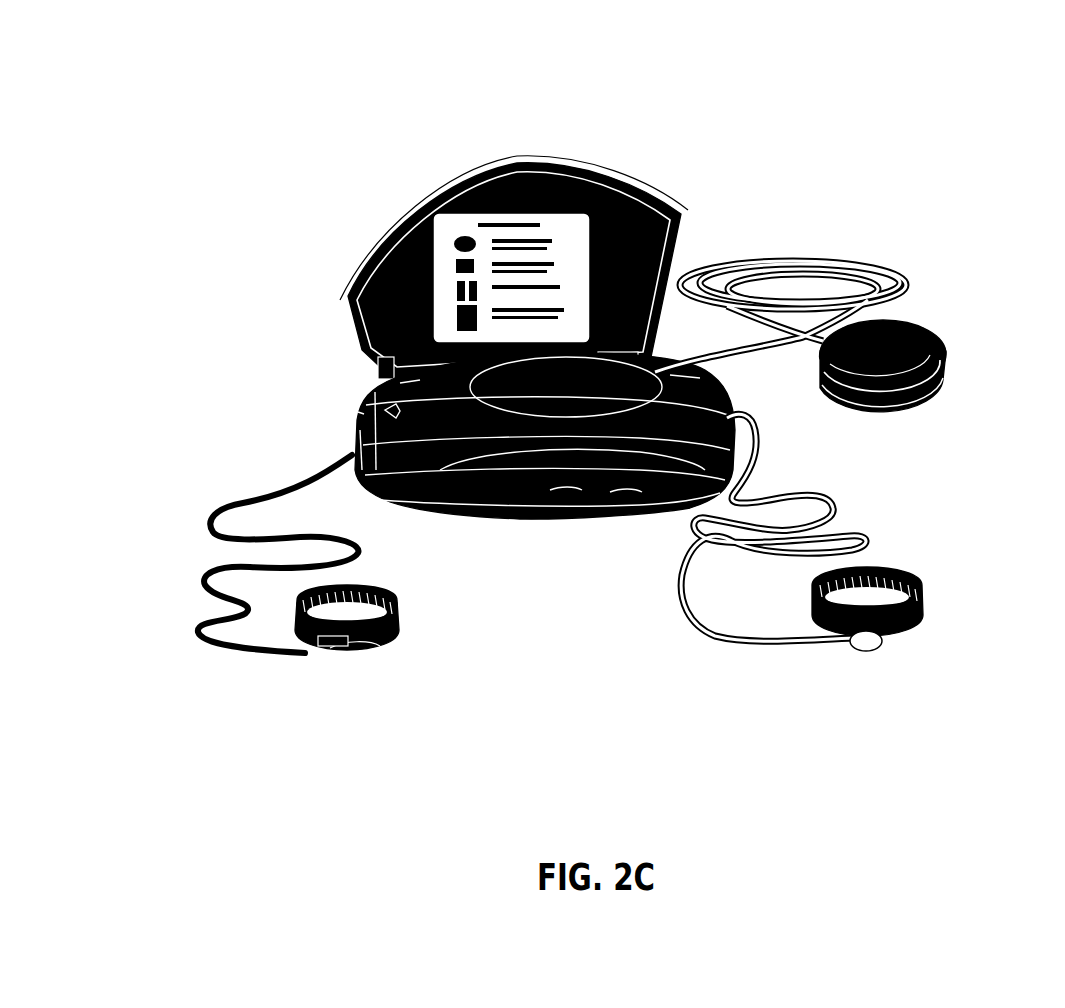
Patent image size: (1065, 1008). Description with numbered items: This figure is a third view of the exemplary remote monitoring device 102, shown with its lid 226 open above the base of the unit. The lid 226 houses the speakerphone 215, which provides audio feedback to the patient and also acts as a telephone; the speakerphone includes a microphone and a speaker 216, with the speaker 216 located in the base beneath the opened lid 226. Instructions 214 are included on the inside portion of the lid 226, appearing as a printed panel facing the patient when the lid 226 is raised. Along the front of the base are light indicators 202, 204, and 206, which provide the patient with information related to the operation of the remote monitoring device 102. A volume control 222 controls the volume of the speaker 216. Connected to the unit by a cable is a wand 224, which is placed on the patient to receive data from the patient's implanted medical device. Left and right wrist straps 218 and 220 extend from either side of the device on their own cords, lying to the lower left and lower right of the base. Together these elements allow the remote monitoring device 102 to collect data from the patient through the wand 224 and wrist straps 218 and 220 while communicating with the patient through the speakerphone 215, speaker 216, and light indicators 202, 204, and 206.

The remote monitoring device 102 is at (484, 275).
The light indicator 202 is at (492, 518).
The light indicator 204 is at (565, 516).
The light indicator 206 is at (618, 513).
The instructions 214 is at (445, 258).
The speakerphone 215 is at (288, 426).
The speaker 216 is at (408, 388).
The left wrist strap 218 is at (345, 672).
The right wrist strap 220 is at (870, 672).
The volume control 222 is at (730, 395).
The wand 224 is at (925, 323).
The lid 226 is at (628, 178).